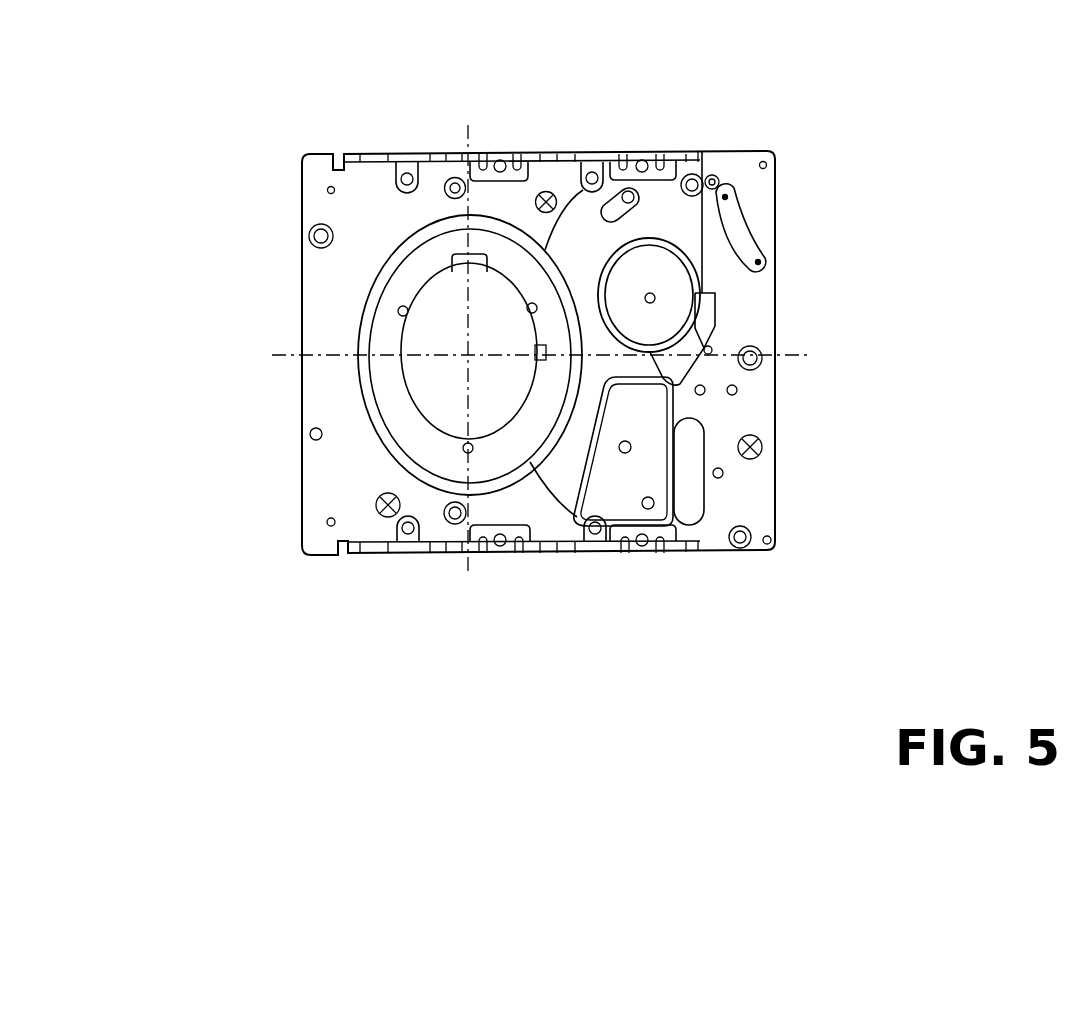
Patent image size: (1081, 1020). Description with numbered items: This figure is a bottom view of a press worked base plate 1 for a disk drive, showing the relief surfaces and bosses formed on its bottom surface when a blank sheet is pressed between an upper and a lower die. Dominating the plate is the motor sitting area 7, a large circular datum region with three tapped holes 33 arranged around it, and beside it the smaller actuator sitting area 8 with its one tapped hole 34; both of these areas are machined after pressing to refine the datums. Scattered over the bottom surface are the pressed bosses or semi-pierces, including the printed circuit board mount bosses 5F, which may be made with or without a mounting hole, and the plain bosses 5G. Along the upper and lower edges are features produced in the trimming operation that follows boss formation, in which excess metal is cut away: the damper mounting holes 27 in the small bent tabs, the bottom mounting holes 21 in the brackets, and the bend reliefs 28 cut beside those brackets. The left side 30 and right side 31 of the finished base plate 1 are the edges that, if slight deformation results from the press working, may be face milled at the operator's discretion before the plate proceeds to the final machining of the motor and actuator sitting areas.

The base plate 1 is at (912, 131).
The printed circuit board mount boss 5F is at (454, 176).
The boss 5G is at (547, 190).
The motor sitting area 7 is at (385, 333).
The actuator sitting area 8 is at (658, 332).
The bottom mounting hole 21 is at (500, 160).
The damper mounting hole 27 is at (402, 155).
The bend relief 28 is at (522, 153).
The left side 30 is at (345, 153).
The right side 31 is at (328, 190).
The tapped holes 33 is at (408, 313).
The tapped hole 34 is at (656, 298).